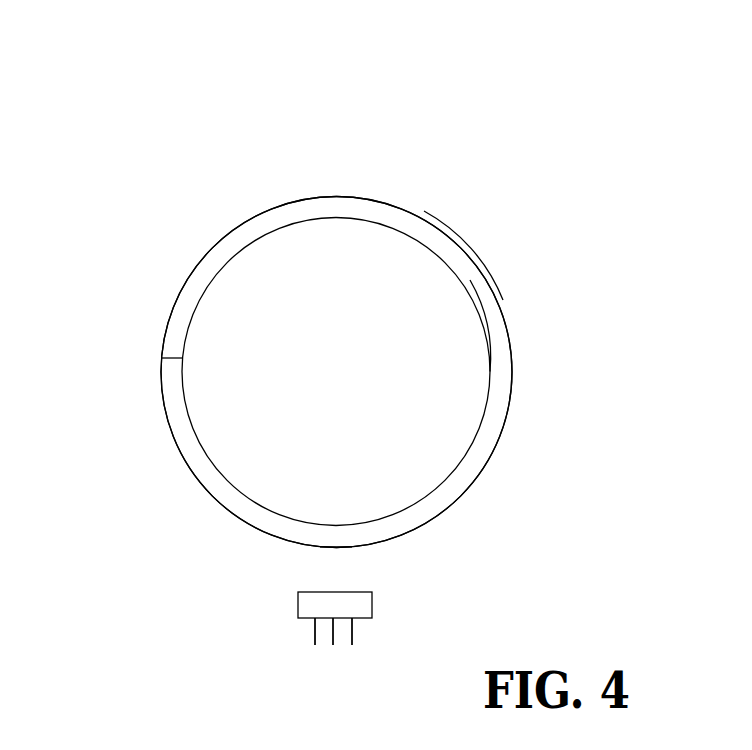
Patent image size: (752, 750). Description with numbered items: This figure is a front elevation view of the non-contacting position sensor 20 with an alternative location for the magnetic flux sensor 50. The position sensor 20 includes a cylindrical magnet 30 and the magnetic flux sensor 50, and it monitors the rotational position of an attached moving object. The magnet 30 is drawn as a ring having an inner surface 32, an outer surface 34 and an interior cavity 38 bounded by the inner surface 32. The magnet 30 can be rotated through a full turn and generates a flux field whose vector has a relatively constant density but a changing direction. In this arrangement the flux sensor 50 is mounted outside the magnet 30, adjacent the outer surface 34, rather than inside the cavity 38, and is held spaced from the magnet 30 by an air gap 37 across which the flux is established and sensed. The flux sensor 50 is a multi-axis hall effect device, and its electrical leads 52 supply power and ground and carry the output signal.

The non-contacting position sensor 20 is at (136, 93).
The magnet 30 is at (229, 229).
The inner surface 32 is at (486, 338).
The outer surface 34 is at (467, 256).
The interior cavity 38 is at (203, 358).
The air gap 37 is at (338, 578).
The magnetic flux sensor 50 is at (372, 600).
The electrical leads 52 is at (315, 637).